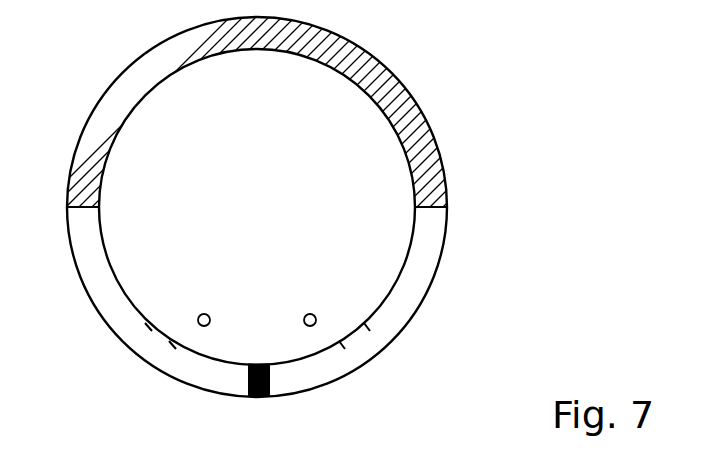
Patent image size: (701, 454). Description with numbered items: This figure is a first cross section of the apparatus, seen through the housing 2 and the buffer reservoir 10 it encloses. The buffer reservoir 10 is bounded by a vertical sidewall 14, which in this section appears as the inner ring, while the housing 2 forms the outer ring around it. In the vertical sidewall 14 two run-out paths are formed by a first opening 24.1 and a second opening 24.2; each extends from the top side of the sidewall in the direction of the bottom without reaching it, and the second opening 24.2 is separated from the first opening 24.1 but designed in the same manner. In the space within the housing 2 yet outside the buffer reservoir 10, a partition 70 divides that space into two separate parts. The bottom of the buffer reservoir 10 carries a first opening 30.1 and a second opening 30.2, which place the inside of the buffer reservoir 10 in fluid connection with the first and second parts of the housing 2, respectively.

The housing 2 is at (443, 248).
The buffer reservoir 10 is at (288, 137).
The vertical sidewall 14 is at (93, 242).
The first opening 30.1 is at (198, 312).
The second opening 30.2 is at (317, 312).
The first opening 24.1 is at (158, 338).
The second opening 24.2 is at (357, 340).
The partition 70 is at (268, 390).